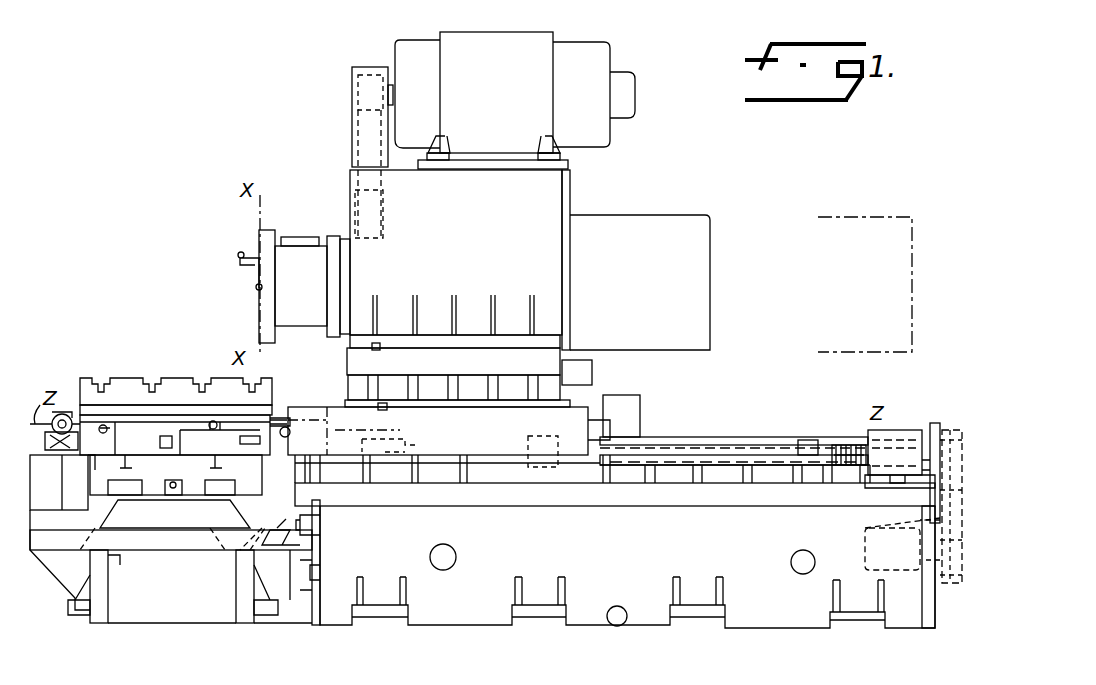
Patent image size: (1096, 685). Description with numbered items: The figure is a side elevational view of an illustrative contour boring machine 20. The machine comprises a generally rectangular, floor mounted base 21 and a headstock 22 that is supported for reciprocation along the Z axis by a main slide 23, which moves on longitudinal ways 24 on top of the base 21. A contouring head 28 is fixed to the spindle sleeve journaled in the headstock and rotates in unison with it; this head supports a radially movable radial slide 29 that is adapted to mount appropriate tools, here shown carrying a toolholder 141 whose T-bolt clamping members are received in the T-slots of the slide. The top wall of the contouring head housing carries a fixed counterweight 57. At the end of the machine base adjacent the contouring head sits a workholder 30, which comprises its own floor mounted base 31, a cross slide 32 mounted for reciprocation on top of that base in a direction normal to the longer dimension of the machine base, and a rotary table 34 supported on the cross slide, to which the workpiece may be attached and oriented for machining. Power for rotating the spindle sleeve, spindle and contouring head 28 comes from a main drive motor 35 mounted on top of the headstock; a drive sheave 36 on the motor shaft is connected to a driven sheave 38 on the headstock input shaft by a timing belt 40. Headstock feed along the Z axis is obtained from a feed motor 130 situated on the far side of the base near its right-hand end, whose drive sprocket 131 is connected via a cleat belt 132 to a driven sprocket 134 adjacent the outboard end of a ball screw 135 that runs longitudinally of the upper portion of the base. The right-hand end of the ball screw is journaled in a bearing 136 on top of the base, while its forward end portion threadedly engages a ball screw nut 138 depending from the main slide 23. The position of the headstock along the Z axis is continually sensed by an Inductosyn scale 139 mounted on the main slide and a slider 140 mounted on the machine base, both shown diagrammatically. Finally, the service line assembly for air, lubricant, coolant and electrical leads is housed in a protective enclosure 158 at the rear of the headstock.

The contour boring machine 20 is at (277, 158).
The base 21 is at (488, 620).
The headstock 22 is at (570, 195).
The main slide 23 is at (572, 412).
The longitudinal ways 24 is at (722, 437).
The contouring head 28 is at (298, 328).
The radial slide 29 is at (262, 250).
The workholder 30 is at (114, 376).
The base 31 is at (162, 615).
The cross slide 32 is at (238, 478).
The rotary table 34 is at (213, 375).
The main drive motor 35 is at (552, 46).
The drive sheave 36 is at (362, 66).
The driven sheave 38 is at (373, 240).
The timing belt 40 is at (352, 124).
The counterweight 57 is at (304, 238).
The feed motor 130 is at (866, 558).
The drive sprocket 131 is at (942, 582).
The cleat belt 132 is at (868, 528).
The driven sprocket 134 is at (955, 428).
The ball screw 135 is at (848, 445).
The bearing 136 is at (893, 431).
The ball screw nut 138 is at (540, 468).
The Inductosyn scale 139 is at (420, 441).
The slider 140 is at (398, 445).
The toolholder 141 is at (252, 266).
The protective enclosure 158 is at (680, 215).